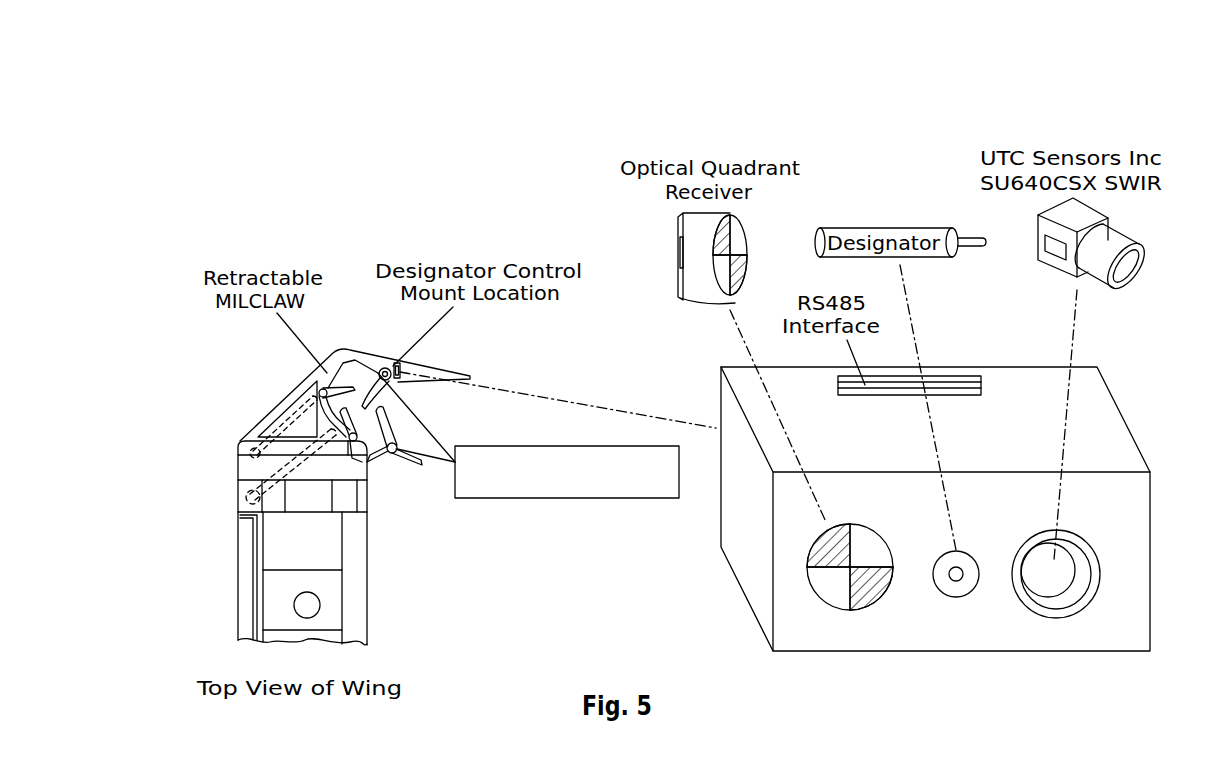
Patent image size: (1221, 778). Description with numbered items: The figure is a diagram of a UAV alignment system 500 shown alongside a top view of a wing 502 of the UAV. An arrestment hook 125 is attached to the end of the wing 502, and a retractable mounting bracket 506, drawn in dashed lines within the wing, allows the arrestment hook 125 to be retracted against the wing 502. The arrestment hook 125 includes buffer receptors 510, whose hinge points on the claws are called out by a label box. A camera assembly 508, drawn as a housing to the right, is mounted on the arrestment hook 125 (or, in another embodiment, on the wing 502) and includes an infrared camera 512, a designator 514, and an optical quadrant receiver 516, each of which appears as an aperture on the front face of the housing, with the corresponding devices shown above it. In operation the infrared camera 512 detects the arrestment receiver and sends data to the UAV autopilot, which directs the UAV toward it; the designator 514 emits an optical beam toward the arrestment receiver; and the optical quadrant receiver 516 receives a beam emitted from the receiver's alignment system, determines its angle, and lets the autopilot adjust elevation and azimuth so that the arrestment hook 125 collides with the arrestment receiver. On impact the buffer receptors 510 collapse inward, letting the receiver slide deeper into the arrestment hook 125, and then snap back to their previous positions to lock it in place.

The UAV alignment system 500 is at (1066, 106).
The wing 502 is at (367, 595).
The retractable mounting bracket 506 is at (290, 468).
The camera assembly 508 is at (1125, 420).
The buffer receptors 510 is at (567, 498).
The infrared camera 512 is at (1052, 618).
The designator 514 is at (950, 597).
The optical quadrant receiver 516 is at (840, 607).
The arrestment hook 125 is at (405, 465).